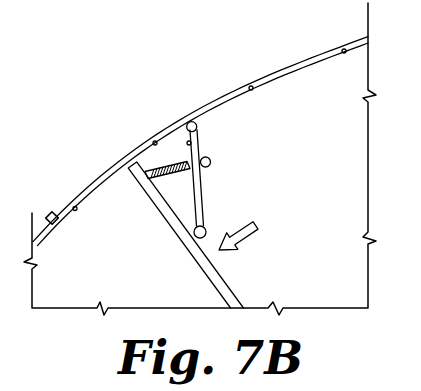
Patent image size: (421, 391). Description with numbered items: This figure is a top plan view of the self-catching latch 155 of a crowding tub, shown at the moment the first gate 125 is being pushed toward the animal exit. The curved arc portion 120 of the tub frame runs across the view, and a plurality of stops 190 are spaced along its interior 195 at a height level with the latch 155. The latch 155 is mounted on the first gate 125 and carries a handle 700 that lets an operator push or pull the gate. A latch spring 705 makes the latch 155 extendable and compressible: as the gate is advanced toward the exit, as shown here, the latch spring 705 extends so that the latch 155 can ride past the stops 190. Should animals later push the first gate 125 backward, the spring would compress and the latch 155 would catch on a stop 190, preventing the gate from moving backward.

The arc portion 120 is at (91, 181).
The first gate 125 is at (200, 265).
The latch 155 is at (205, 207).
The stops 190 is at (155, 146).
The interior 195 is at (294, 69).
The handle 700 is at (211, 161).
The latch spring 705 is at (180, 161).